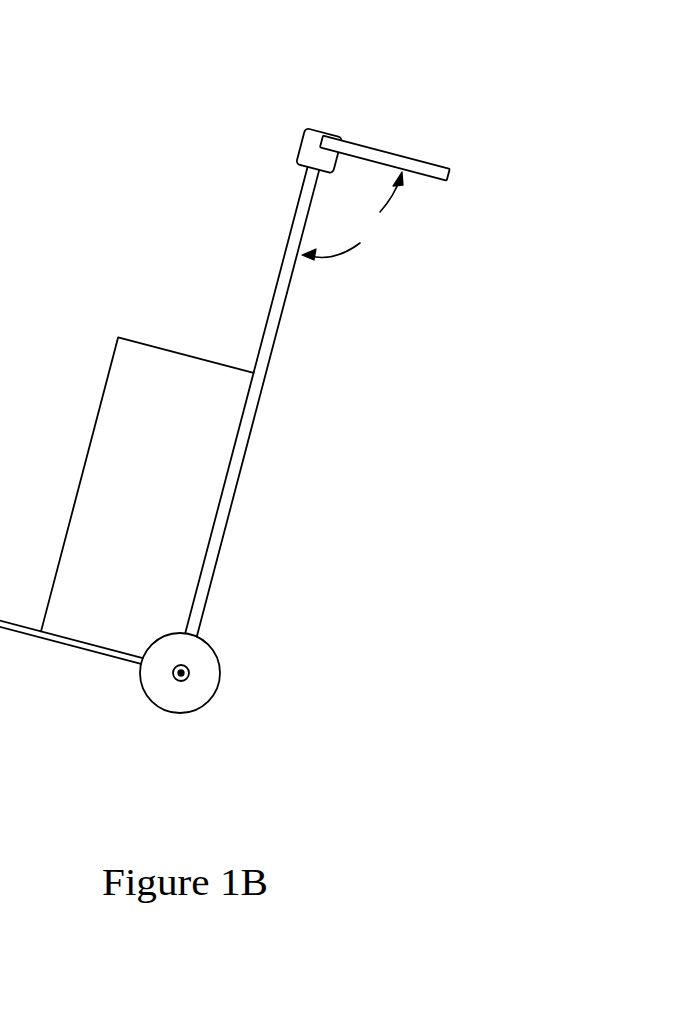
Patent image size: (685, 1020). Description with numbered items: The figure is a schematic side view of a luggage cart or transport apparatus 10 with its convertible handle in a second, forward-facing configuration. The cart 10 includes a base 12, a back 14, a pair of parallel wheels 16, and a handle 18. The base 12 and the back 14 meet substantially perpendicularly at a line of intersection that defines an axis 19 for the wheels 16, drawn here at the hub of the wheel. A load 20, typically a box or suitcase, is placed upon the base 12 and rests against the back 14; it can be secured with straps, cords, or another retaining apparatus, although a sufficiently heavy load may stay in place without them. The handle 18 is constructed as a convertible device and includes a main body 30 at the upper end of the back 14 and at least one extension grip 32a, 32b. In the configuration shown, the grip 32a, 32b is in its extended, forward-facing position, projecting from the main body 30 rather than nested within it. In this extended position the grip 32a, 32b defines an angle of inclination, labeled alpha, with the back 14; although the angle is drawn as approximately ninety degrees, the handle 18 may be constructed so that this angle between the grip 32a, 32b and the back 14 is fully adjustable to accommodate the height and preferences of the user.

The luggage cart 10 is at (315, 390).
The base 12 is at (88, 655).
The back 14 is at (230, 493).
The wheels 16 is at (207, 682).
The handle 18 is at (357, 105).
The axis 19 is at (185, 675).
The load 20 is at (175, 507).
The main body 30 is at (307, 153).
The extension grip 32a is at (443, 170).
The extension grip 32b is at (385, 158).